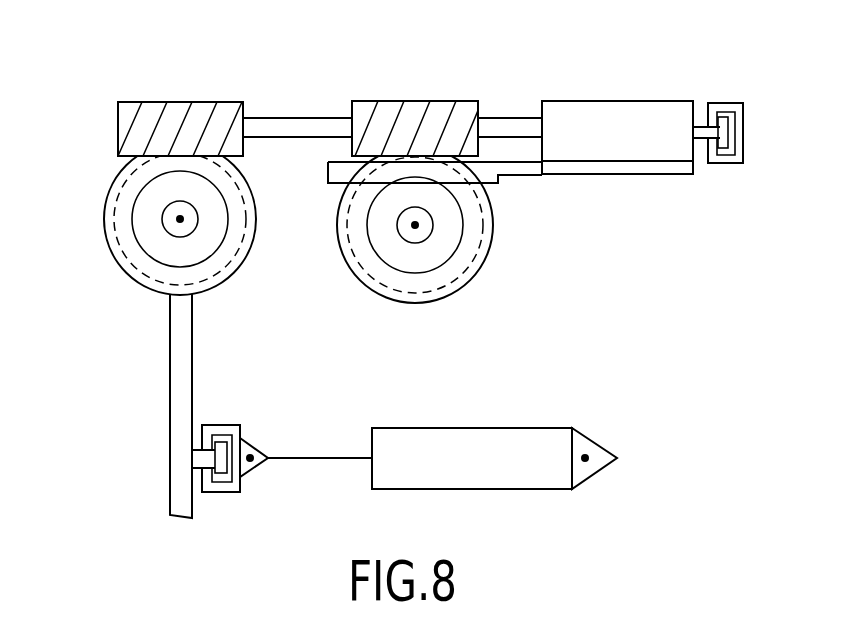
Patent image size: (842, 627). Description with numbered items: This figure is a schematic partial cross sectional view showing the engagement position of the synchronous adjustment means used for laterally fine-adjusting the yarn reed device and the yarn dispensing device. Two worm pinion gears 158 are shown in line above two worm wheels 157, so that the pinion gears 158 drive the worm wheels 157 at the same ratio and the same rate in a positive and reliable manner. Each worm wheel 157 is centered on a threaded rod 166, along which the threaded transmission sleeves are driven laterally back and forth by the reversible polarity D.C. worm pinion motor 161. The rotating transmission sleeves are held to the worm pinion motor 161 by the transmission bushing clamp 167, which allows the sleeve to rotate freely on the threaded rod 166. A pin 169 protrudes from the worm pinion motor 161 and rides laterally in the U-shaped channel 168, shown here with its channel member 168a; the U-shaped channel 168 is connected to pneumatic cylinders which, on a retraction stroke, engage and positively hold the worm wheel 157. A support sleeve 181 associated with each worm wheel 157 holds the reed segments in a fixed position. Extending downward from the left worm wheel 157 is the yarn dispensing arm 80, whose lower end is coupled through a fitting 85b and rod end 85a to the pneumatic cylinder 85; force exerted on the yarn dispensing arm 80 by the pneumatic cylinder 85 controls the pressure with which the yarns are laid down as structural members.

The worm wheel 157 is at (237, 275).
The support sleeve 181 is at (145, 248).
The threaded rod 166 is at (163, 212).
The yarn dispensing arm 80 is at (193, 375).
The worm pinion gear 158 is at (180, 101).
The transmission bushing clamp 167 is at (483, 185).
The worm pinion motor 161 is at (610, 101).
The pin 169 is at (700, 142).
The bracket 168a is at (727, 103).
The U-shaped channel 168 is at (743, 132).
The bracket 85b is at (197, 467).
The rod end 85a is at (230, 492).
The pneumatic cylinder 85 is at (542, 428).